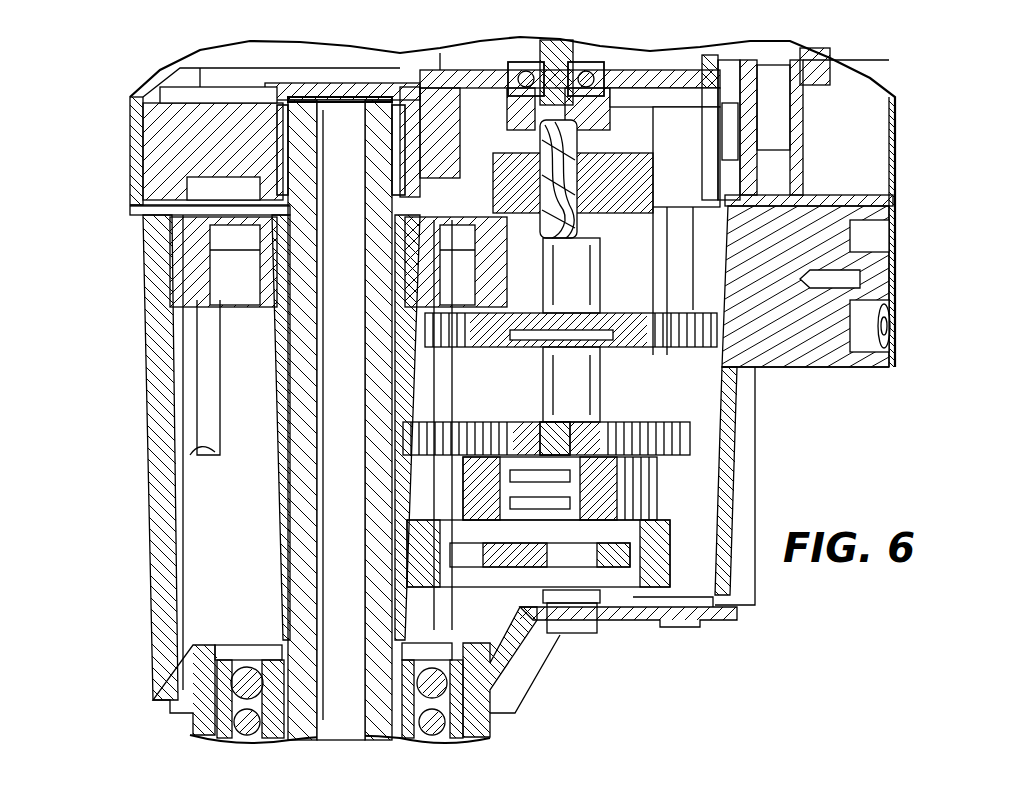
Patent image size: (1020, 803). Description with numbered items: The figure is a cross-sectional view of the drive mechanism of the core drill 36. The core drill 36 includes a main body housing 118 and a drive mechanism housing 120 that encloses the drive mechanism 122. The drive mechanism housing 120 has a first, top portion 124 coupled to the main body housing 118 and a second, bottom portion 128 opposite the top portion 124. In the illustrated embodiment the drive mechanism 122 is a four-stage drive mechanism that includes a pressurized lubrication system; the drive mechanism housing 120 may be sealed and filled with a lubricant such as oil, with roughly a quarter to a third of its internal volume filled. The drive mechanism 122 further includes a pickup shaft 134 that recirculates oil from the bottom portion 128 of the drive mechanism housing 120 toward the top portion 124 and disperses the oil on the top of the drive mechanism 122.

The core drill 36 is at (884, 60).
The main body housing 118 is at (134, 128).
The drive mechanism housing 120 is at (150, 402).
The drive mechanism 122 is at (697, 263).
The first, top portion 124 is at (140, 213).
The second, bottom portion 128 is at (712, 618).
The pickup shaft 134 is at (441, 608).